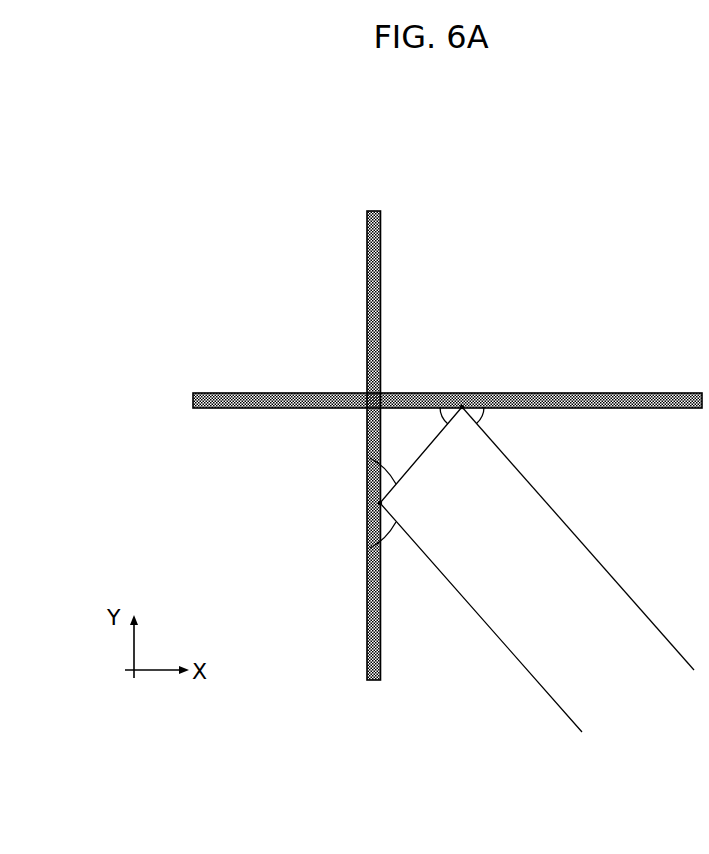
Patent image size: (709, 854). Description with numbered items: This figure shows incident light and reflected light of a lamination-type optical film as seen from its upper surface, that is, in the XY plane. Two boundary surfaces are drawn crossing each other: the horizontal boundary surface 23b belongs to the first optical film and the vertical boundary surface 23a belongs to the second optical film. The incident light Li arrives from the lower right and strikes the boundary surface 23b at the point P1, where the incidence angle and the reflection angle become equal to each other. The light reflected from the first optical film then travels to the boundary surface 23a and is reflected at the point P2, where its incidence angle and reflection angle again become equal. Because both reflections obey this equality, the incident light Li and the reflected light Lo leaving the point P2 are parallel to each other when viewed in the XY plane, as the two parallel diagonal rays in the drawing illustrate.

The boundary surface 23a is at (380, 247).
The boundary surface 23b is at (625, 409).
The incident light Li is at (578, 538).
The reflected light Lo is at (481, 569).
The point P1 is at (465, 402).
The point P2 is at (378, 501).